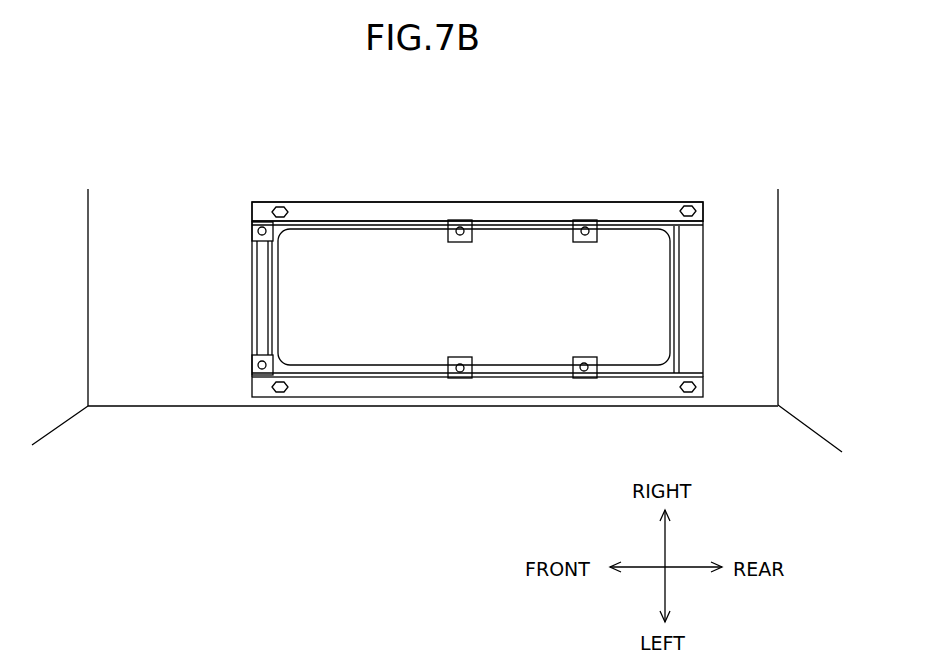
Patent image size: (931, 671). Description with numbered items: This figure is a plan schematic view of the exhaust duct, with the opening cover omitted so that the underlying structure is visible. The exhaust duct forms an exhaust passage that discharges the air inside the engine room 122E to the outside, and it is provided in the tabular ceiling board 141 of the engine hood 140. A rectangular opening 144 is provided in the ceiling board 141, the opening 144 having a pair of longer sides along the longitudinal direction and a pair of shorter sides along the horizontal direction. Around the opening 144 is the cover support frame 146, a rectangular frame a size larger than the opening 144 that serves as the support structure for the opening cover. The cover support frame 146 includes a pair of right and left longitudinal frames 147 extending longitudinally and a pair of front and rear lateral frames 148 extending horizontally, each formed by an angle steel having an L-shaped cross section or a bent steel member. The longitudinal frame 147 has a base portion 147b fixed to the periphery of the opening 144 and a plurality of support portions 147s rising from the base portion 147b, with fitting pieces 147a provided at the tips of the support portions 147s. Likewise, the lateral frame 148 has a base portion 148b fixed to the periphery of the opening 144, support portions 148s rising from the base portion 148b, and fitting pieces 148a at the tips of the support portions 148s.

The engine room 122E is at (424, 335).
The engine hood 140 is at (192, 415).
The ceiling board 141 is at (142, 373).
The opening 144 is at (354, 353).
The cover support frame 146 is at (477, 306).
The longitudinal frame 147 is at (520, 203).
The fitting piece 147a is at (588, 355).
The base portion 147b is at (437, 209).
The support portion 147s is at (585, 221).
The lateral frame 148 is at (477, 299).
The fitting piece 148a is at (277, 240).
The base portion 148b is at (258, 287).
The support portion 148s is at (250, 235).